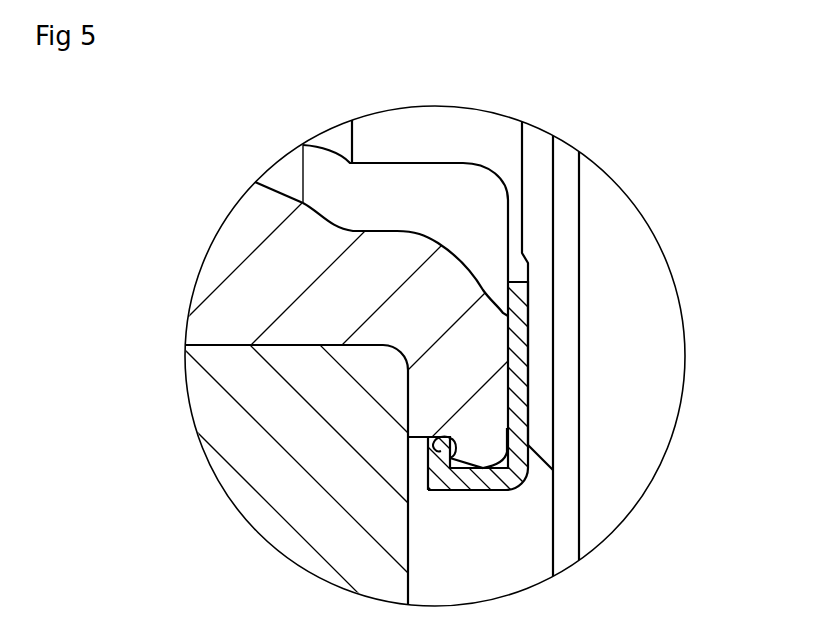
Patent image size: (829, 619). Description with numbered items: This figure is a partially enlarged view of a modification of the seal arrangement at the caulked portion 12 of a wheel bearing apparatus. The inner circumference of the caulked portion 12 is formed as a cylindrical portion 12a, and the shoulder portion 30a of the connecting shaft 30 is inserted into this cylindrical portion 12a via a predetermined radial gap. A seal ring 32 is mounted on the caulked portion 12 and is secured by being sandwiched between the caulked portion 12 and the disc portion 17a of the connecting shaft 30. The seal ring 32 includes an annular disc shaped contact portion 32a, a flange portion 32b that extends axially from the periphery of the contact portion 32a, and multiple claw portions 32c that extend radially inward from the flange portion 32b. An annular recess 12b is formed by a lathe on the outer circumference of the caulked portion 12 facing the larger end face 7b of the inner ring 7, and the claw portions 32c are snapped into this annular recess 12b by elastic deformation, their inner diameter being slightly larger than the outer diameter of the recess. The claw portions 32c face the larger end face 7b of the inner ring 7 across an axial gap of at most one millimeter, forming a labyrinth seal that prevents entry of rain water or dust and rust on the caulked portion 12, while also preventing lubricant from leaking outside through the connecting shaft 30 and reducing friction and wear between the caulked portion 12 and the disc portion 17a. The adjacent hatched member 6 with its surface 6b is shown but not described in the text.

The shaft 6 is at (221, 231).
The step surface of shaft 6b is at (235, 348).
The inner ring 7 is at (235, 448).
The larger end face 7b is at (408, 518).
The caulked portion 12 is at (485, 395).
The cylindrical portion 12a is at (388, 231).
The annular recess 12b is at (438, 442).
The disc portion 17a is at (554, 506).
The connecting shaft 30 is at (617, 184).
The shoulder portion 30a is at (422, 167).
The seal ring 32 is at (545, 435).
The contact portion 32a is at (523, 338).
The flange portion 32b is at (485, 490).
The claw portions 32c is at (437, 458).